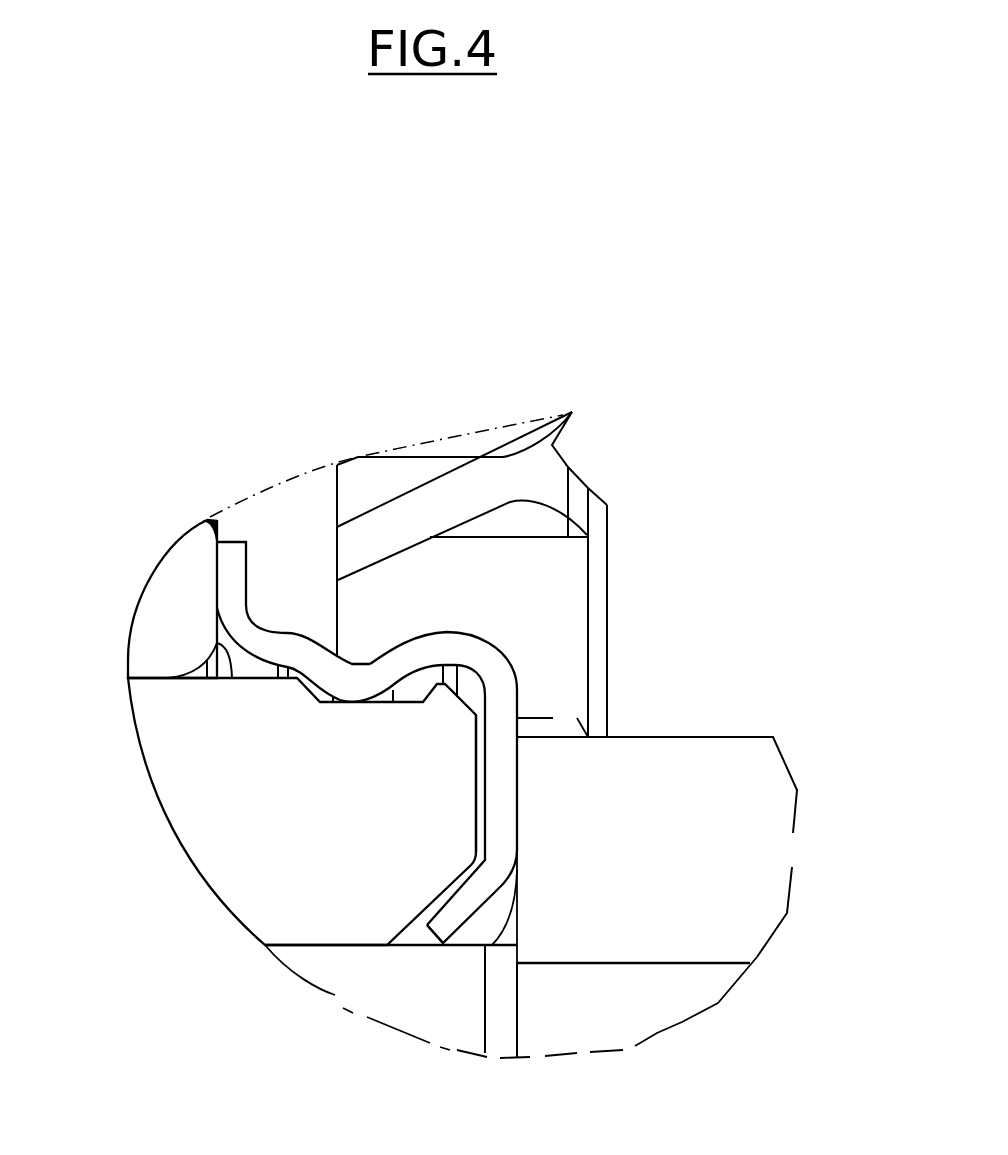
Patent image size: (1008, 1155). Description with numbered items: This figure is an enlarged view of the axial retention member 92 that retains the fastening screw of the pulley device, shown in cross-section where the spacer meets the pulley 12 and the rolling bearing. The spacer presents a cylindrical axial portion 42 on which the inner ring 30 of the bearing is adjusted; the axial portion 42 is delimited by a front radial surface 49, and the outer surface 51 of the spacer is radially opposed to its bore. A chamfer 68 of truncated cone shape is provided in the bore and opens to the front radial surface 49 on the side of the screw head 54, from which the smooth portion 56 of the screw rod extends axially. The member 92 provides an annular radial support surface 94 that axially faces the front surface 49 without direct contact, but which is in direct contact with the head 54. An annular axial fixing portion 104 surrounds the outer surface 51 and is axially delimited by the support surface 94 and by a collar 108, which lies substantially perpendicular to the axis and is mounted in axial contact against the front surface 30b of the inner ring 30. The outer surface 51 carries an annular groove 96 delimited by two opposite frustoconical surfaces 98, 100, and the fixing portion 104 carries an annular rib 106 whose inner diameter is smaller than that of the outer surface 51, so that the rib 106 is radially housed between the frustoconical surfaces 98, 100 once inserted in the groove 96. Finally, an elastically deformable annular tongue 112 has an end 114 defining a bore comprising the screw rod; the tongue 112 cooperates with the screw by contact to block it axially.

The pulley 12 is at (607, 587).
The inner ring 30 is at (140, 598).
The front surface 30b is at (222, 577).
The cylindrical axial portion 42 is at (185, 835).
The front radial surface 49 is at (477, 797).
The outer surface 51 is at (217, 643).
The screw head 54 is at (790, 851).
The smooth portion 56 is at (333, 992).
The chamfer 68 is at (407, 945).
The axial retention member 92 is at (483, 636).
The annular radial support surface 94 is at (503, 720).
The annular groove 96 is at (334, 695).
The frustoconical surface 98 is at (278, 677).
The frustoconical surface 100 is at (425, 672).
The annular axial fixing portion 104 is at (293, 672).
The annular rib 106 is at (368, 688).
The collar 108 is at (238, 580).
The annular tongue 112 is at (465, 903).
The end 114 is at (437, 937).